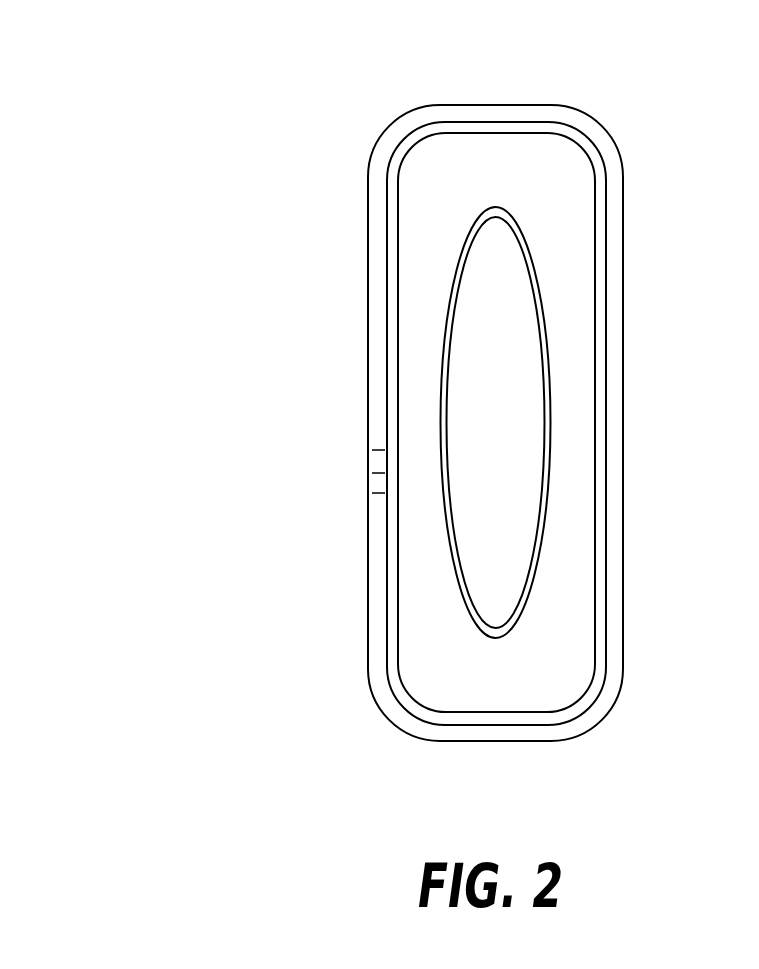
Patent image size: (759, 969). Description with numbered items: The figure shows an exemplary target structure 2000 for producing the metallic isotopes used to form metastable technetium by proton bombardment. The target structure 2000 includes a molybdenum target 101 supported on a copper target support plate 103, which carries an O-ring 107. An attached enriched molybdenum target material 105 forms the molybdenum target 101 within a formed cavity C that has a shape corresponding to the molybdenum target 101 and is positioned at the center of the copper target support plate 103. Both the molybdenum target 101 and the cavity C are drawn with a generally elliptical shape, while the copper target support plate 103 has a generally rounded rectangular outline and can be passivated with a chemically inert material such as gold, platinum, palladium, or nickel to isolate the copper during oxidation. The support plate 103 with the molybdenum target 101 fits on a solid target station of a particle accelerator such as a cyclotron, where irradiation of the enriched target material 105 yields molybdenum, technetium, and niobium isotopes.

The target structure 2000 is at (170, 72).
The copper target support plate 103 is at (535, 105).
The enriched 100Mo target material 105 is at (508, 368).
The cavity C is at (522, 412).
The O-ring 107 is at (600, 478).
The molybdenum target 101 is at (510, 565).